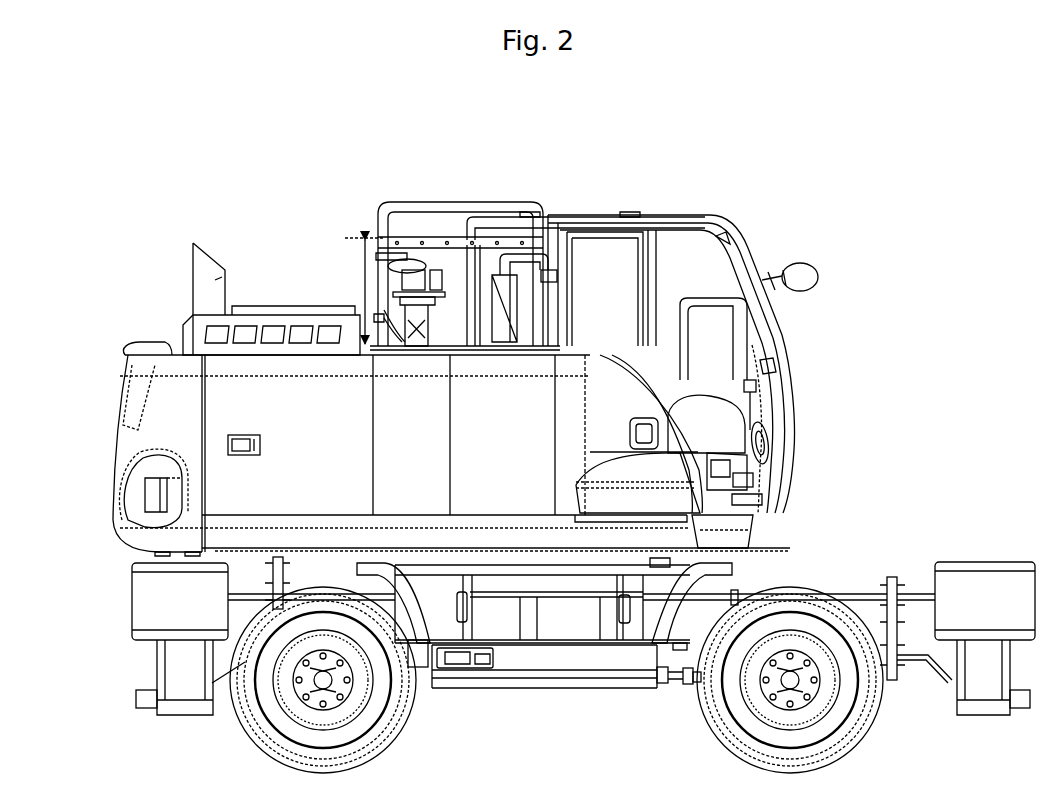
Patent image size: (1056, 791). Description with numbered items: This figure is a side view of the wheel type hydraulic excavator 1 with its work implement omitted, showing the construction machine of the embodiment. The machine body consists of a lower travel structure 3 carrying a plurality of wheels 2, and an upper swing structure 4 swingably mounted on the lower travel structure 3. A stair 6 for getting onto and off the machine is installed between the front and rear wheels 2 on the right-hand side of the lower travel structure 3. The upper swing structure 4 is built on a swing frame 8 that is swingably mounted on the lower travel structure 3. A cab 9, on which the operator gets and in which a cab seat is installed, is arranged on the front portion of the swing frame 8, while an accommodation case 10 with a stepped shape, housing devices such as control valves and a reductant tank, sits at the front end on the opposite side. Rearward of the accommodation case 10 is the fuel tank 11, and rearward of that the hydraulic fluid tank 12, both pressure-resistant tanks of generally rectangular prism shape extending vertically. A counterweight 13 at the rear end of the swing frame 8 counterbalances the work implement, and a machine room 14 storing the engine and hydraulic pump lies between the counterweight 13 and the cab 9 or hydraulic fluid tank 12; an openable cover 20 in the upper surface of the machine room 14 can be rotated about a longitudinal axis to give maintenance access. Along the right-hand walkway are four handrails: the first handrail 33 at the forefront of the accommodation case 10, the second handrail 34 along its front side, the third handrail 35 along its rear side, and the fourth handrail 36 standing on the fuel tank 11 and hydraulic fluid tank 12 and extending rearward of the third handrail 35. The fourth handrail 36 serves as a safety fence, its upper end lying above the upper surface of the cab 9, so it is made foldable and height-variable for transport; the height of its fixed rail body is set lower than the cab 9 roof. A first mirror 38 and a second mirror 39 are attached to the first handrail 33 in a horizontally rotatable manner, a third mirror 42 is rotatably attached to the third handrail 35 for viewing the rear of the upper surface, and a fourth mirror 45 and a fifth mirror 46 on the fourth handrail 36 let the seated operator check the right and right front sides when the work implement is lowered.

The wheel type hydraulic excavator 1 is at (856, 210).
The wheels 2 is at (265, 727).
The lower travel structure 3 is at (120, 655).
The upper swing structure 4 is at (135, 292).
The stair 6 is at (567, 550).
The swing frame 8 is at (642, 535).
The cab 9 is at (695, 257).
The accommodation case 10 is at (680, 407).
The fuel tank 11 is at (497, 495).
The hydraulic fluid tank 12 is at (418, 493).
The counterweight 13 is at (167, 478).
The machine room 14 is at (228, 410).
The openable cover 20 is at (268, 313).
The first handrail 33 is at (762, 490).
The second handrail 34 is at (772, 368).
The third handrail 35 is at (603, 217).
The fourth handrail 36 is at (478, 202).
The first mirror 38 is at (752, 386).
The second mirror 39 is at (772, 455).
The third mirror 42 is at (506, 270).
The fourth mirror 45 is at (420, 262).
The fifth mirror 46 is at (397, 252).